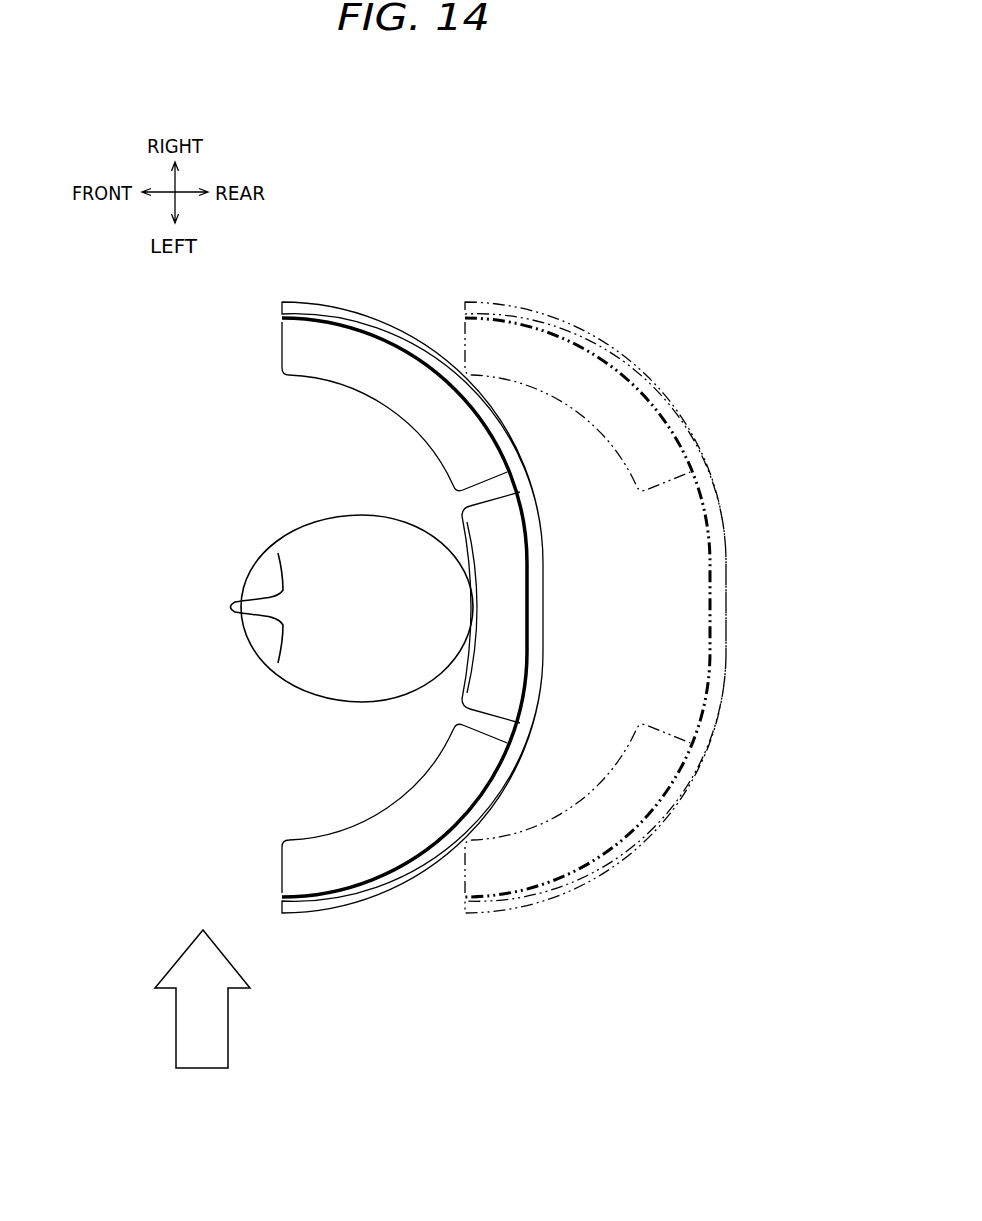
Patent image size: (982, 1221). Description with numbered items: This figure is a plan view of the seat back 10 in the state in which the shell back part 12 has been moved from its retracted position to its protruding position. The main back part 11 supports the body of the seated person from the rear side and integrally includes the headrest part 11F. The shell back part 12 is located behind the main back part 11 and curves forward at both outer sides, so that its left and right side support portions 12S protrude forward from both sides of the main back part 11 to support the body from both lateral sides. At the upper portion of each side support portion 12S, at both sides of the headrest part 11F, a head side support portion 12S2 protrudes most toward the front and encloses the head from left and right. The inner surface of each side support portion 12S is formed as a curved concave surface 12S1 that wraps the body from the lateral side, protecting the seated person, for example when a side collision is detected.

The seat back 10 is at (574, 267).
The main back part 11 is at (588, 607).
The headrest part 11F is at (714, 607).
The shell back part 12 is at (425, 607).
The side support portion 12S is at (404, 607).
The curved concave surface 12S1 is at (390, 413).
The head side support portion 12S2 is at (427, 395).